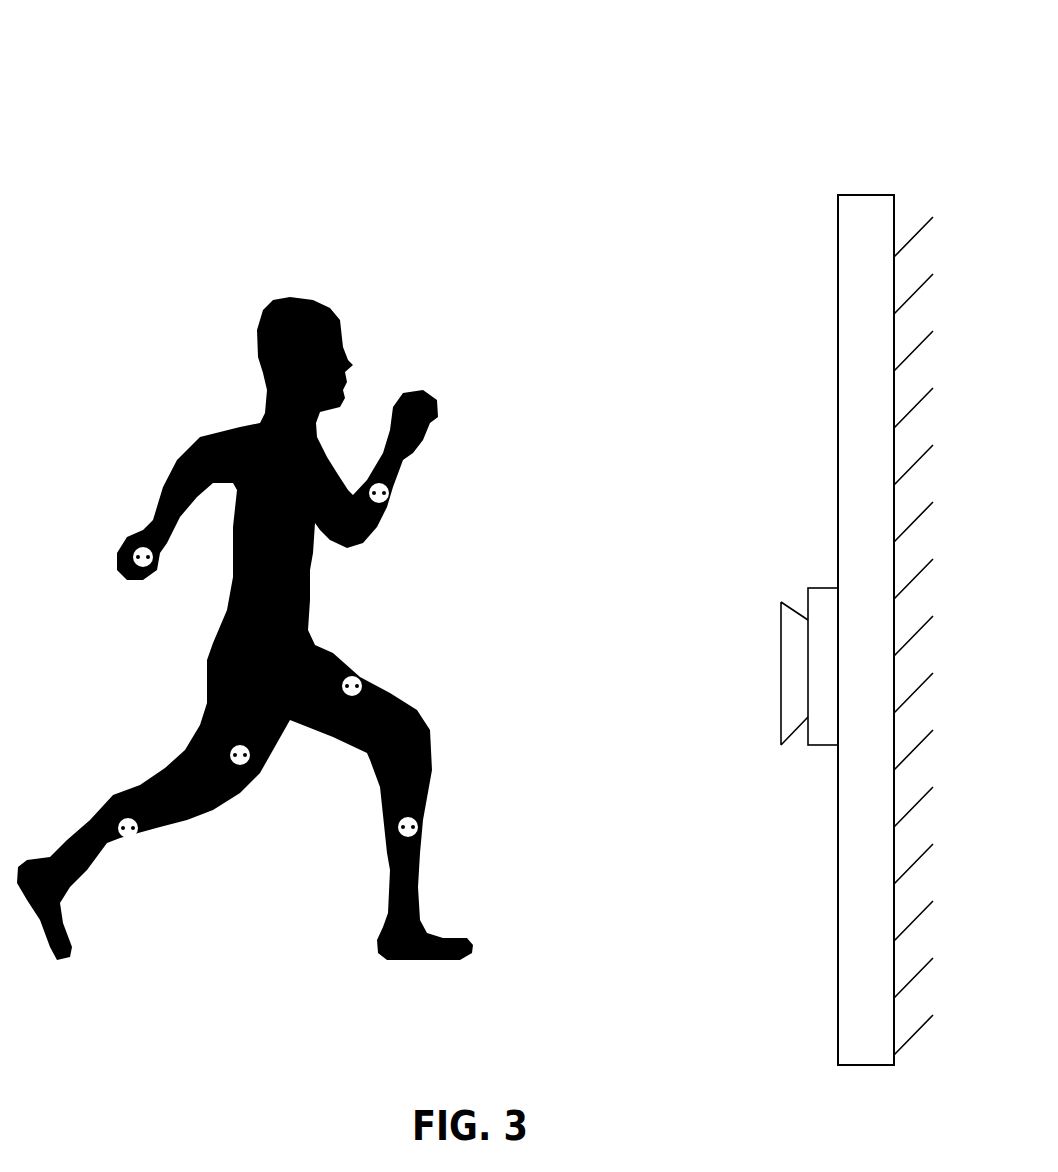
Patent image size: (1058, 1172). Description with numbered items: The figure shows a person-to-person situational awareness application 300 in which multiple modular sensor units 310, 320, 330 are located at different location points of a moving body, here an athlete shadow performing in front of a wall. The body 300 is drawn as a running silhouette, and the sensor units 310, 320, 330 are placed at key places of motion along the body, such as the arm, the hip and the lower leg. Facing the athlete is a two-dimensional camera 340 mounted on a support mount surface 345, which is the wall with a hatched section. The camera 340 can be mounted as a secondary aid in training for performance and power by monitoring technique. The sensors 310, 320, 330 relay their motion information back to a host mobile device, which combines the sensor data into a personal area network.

The situational awareness application 300 is at (210, 133).
The modular sensor unit 310 is at (391, 490).
The modular sensor unit 320 is at (361, 681).
The modular sensor unit 330 is at (418, 830).
The 2D camera 340 is at (823, 628).
The support mount surface 345 is at (873, 252).